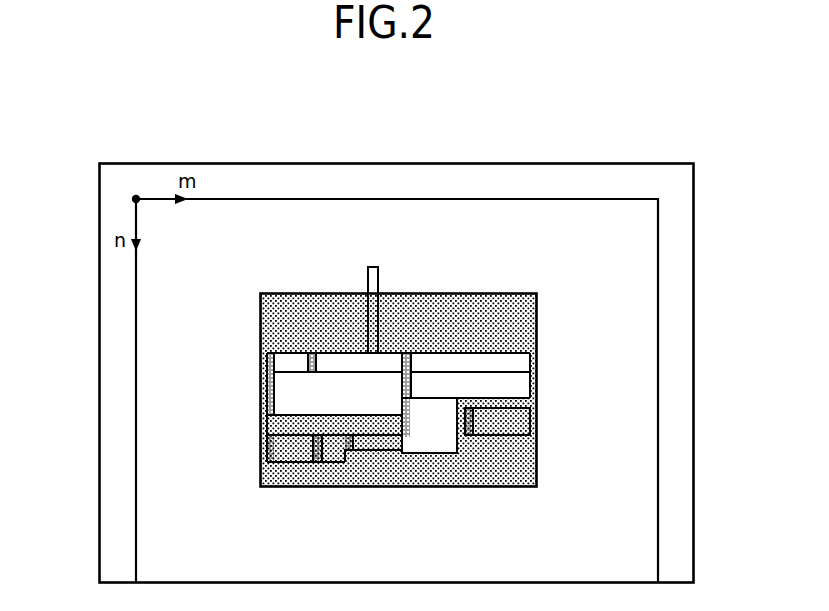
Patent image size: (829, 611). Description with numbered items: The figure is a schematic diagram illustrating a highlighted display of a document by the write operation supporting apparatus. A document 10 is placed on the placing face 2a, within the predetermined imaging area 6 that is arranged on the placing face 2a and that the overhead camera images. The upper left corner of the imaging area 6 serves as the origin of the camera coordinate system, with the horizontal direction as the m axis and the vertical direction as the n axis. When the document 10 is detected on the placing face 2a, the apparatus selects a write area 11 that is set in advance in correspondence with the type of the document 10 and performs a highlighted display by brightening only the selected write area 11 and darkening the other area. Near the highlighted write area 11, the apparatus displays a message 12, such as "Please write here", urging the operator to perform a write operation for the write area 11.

The placing face 2a is at (648, 172).
The imaging area 6 is at (658, 474).
The document 10 is at (537, 333).
The write area 11 is at (283, 390).
The message 12 is at (298, 213).